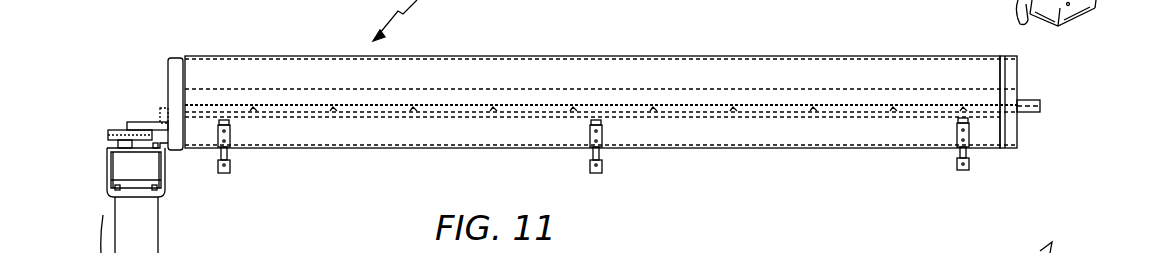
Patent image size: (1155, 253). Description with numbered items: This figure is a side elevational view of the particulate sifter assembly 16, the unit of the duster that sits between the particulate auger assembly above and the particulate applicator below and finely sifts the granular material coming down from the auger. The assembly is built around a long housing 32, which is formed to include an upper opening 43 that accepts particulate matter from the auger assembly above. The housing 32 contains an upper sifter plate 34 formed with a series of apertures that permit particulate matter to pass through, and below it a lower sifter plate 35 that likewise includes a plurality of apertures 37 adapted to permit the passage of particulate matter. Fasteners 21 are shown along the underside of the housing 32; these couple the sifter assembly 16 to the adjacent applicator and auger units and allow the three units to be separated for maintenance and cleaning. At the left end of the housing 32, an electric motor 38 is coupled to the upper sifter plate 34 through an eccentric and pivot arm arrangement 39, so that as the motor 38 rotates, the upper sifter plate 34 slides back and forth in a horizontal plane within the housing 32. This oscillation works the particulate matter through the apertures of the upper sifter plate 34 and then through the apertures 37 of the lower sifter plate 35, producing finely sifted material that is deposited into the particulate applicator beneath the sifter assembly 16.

The eccentric and pivot arm arrangement 39 is at (148, 120).
The upper sifter plate 34 is at (228, 113).
The apertures 37 is at (327, 120).
The lower sifter plate 35 is at (435, 122).
The fasteners 21 is at (603, 157).
The upper opening 43 is at (776, 80).
The housing 32 is at (818, 127).
The electric motor 38 is at (132, 222).
The particulate sifter assembly 16 is at (1060, 252).